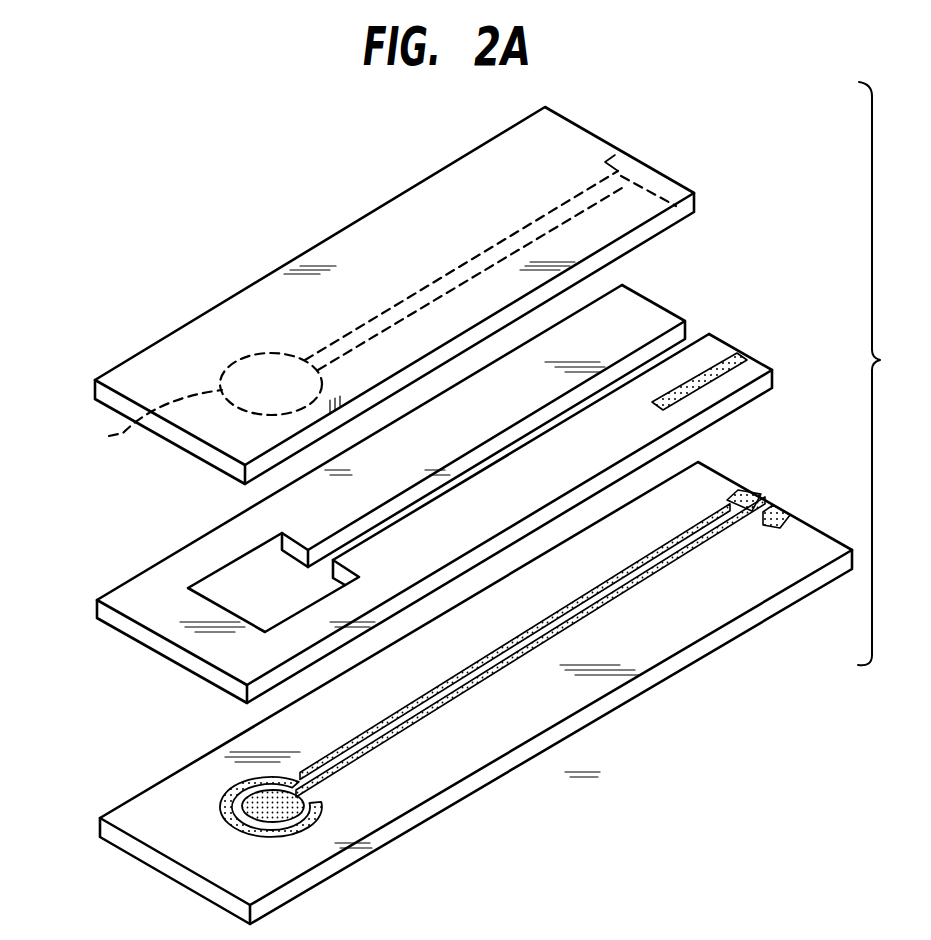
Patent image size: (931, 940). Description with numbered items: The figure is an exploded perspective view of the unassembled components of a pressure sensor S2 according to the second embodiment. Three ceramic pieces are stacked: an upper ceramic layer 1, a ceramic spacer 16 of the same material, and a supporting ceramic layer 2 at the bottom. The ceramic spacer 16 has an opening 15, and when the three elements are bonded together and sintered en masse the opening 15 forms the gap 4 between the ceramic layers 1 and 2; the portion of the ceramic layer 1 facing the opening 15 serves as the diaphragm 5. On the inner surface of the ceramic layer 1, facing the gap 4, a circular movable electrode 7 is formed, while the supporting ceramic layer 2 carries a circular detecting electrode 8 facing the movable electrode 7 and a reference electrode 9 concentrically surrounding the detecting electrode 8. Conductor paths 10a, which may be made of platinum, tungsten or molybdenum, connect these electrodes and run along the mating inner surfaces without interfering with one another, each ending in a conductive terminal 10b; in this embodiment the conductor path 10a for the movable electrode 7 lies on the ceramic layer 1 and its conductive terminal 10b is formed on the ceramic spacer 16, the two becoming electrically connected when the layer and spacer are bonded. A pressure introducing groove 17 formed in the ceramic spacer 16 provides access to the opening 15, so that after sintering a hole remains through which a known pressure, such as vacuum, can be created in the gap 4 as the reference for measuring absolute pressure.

The ceramic layer 1 is at (394, 295).
The supporting ceramic layer 2 is at (645, 690).
The gap 4 is at (417, 482).
The diaphragm 5 is at (252, 382).
The movable electrode 7 is at (156, 421).
The detecting electrode 8 is at (287, 817).
The reference electrode 9 is at (322, 808).
The conductor path 10a is at (455, 270).
The conductive terminal 10b is at (737, 355).
The opening 15 is at (227, 592).
The ceramic spacer 16 is at (417, 494).
The pressure introducing groove 17 is at (653, 352).
The pressure sensor S2 is at (437, 516).